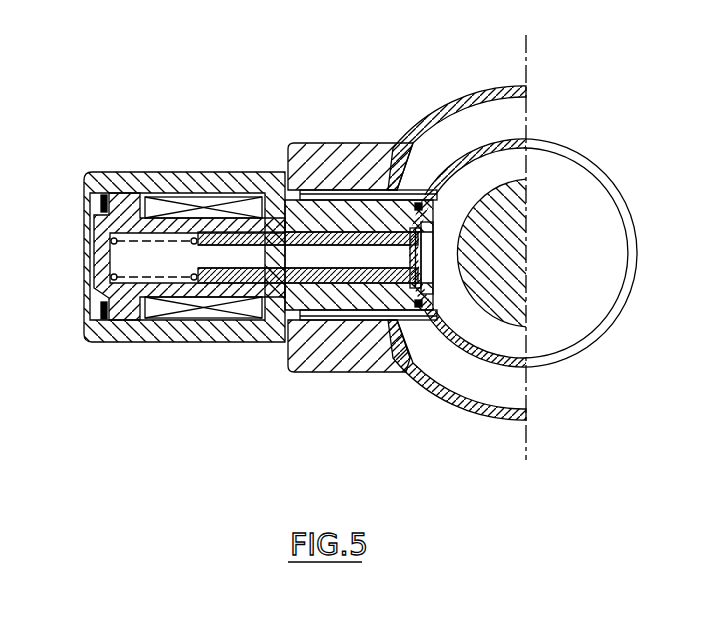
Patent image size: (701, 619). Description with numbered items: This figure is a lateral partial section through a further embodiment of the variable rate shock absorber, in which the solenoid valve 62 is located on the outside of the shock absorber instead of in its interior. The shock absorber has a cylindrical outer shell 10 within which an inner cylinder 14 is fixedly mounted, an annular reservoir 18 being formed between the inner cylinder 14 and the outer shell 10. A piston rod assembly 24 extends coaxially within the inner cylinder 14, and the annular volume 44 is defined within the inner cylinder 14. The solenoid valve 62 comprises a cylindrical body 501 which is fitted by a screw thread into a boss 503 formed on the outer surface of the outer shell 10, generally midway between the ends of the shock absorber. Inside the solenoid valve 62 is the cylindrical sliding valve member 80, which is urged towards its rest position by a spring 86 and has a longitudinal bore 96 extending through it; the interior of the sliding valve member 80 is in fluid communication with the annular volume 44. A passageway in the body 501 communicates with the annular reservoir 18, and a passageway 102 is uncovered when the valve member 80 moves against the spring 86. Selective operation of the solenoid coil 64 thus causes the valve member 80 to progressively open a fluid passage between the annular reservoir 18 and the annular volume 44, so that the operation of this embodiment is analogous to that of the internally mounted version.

The cylindrical outer shell 10 is at (486, 88).
The inner cylinder 14 is at (472, 352).
The annular reservoir 18 is at (503, 392).
The piston rod assembly 24 is at (513, 257).
The annular volume 44 is at (496, 338).
The solenoid valve 62 is at (184, 277).
The solenoid coil 64 is at (195, 205).
The valve member 80 is at (318, 232).
The spring 86 is at (118, 240).
The longitudinal bore 96 is at (295, 262).
The passageway 102 is at (378, 192).
The cylindrical body 501 is at (168, 342).
The boss 503 is at (333, 372).